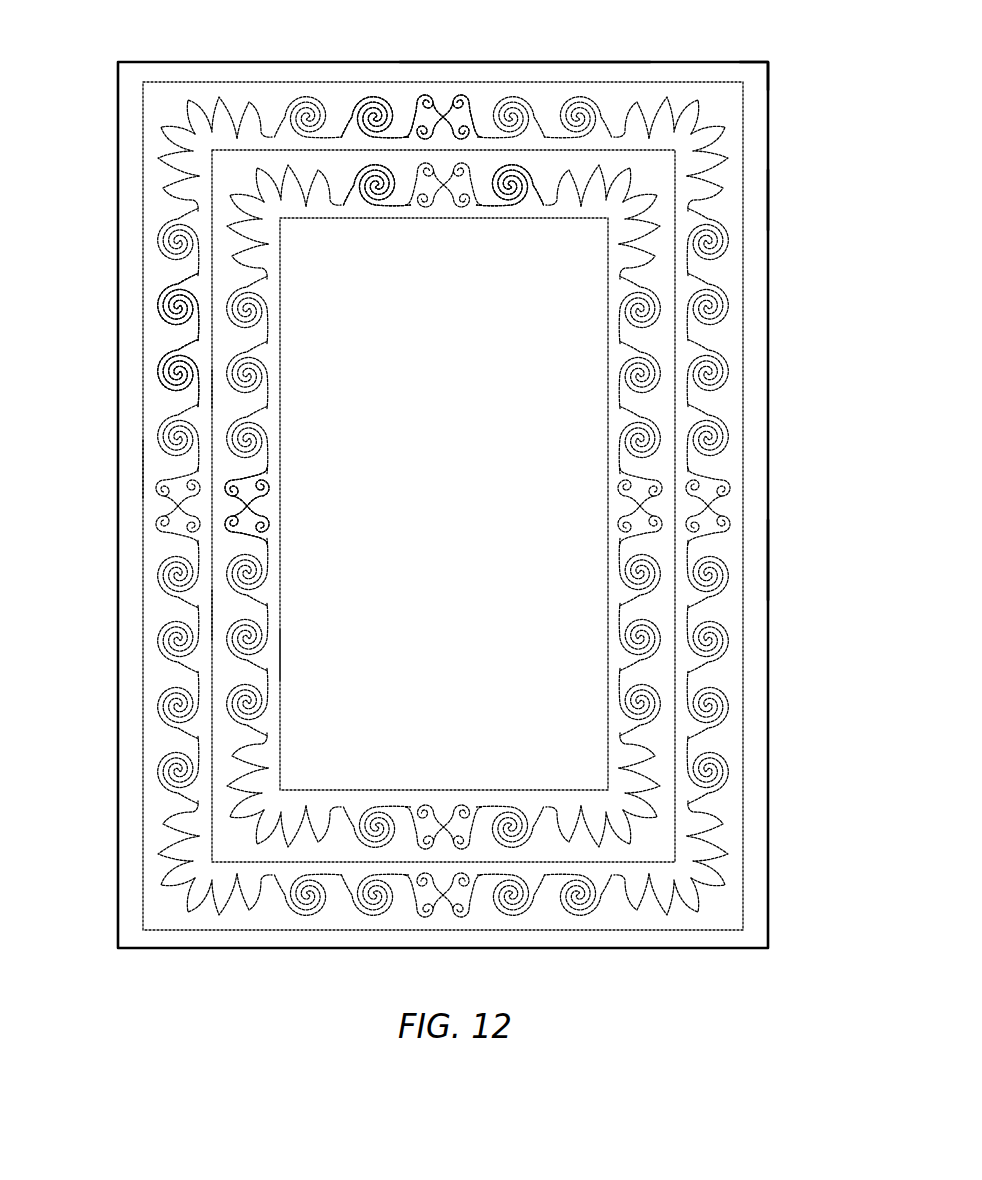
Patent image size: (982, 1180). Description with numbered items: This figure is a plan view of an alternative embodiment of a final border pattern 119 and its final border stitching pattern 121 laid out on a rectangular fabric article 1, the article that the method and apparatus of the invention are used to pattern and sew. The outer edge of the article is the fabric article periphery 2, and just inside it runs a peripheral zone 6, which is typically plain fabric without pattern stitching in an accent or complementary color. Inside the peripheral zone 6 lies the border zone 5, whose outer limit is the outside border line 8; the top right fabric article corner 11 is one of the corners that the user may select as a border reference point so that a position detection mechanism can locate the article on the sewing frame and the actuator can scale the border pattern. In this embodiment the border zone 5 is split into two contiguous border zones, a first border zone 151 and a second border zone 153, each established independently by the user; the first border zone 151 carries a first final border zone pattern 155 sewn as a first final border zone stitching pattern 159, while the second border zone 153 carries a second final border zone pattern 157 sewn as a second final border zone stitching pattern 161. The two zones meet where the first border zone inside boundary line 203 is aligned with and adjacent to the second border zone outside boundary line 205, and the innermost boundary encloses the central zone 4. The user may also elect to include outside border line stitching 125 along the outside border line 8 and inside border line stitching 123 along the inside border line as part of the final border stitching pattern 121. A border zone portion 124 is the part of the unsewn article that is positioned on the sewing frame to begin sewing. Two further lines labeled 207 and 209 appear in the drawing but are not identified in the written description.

The fabric article 1 is at (768, 462).
The fabric article periphery 2 is at (768, 546).
The central zone 4 is at (540, 340).
The border zone 5 is at (643, 97).
The peripheral zone 6 is at (528, 73).
The outside border line 8 is at (217, 80).
The top right fabric article corner 11 is at (768, 62).
The final border pattern 119 is at (304, 97).
The final border stitching pattern 121 is at (372, 97).
The inside border line stitching 123 is at (417, 150).
The border zone portion 124 is at (768, 196).
The outside border line stitching 125 is at (457, 80).
The first border zone 151 is at (160, 402).
The second border zone 153 is at (235, 472).
The first final border zone pattern 155 is at (165, 323).
The second final border zone pattern 157 is at (264, 262).
The first final border zone stitching pattern 159 is at (515, 207).
The second final border zone stitching pattern 161 is at (365, 205).
The first border zone inside boundary line 203 is at (212, 390).
The second border zone outside boundary line 205 is at (143, 468).
The central panel edge 207 is at (281, 654).
The intermediate line segment 209 is at (208, 612).